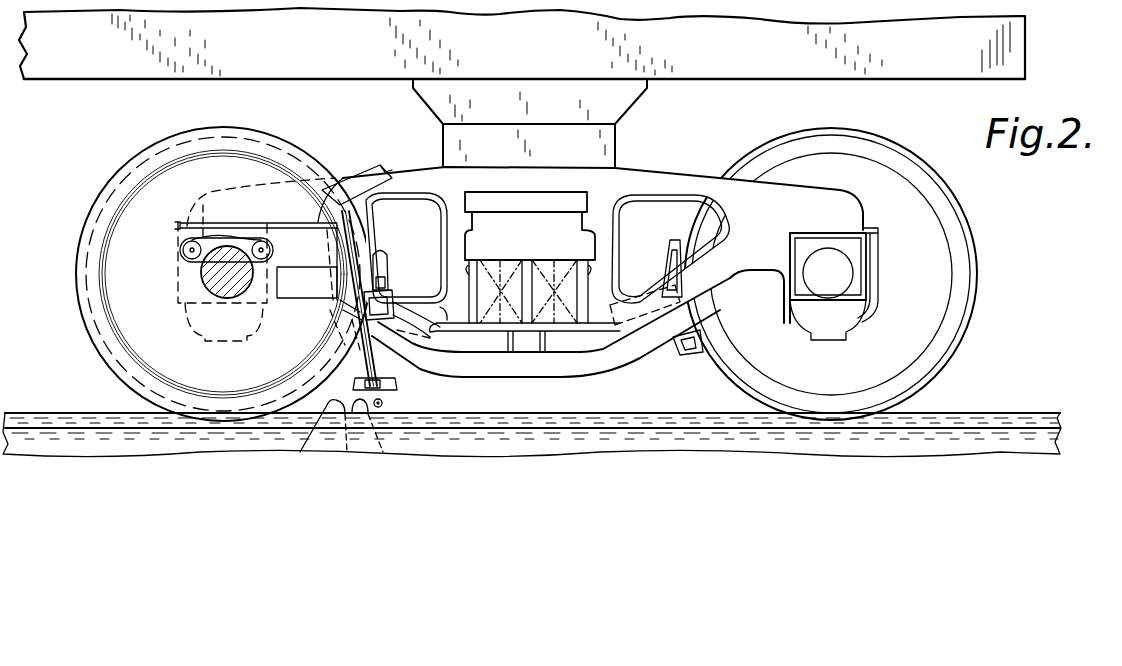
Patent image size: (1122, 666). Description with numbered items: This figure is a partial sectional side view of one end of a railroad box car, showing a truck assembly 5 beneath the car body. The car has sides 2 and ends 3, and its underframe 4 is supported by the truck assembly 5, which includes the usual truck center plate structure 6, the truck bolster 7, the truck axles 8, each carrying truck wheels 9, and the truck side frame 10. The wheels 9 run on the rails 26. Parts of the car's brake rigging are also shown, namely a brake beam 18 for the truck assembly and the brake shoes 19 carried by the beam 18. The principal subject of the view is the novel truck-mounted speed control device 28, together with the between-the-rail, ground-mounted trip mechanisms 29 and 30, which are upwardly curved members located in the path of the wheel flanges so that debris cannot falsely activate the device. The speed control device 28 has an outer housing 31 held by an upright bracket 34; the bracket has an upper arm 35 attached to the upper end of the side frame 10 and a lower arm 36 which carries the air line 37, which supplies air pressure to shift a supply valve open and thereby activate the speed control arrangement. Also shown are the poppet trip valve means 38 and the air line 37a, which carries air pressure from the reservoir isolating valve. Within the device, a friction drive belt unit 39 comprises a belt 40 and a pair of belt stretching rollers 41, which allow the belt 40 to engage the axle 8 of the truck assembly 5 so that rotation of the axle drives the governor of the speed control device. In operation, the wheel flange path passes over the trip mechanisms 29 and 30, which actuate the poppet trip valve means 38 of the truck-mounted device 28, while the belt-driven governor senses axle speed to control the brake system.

The side 2 is at (522, 43).
The end 3 is at (1025, 42).
The underframe 4 is at (320, 80).
The truck assembly 5 is at (598, 249).
The truck center plate structure 6 is at (441, 137).
The truck bolster 7 is at (531, 208).
The truck axle 8 is at (844, 278).
The truck wheel 9 is at (962, 210).
The truck side frame 10 is at (672, 180).
The brake beam 18 is at (415, 300).
The brake shoe 19 is at (380, 257).
The rail 26 is at (578, 410).
The truck mounted speed control device 28 is at (227, 214).
The trip mechanism 29 is at (334, 416).
The trip mechanism 30 is at (383, 440).
The outer housing 31 is at (283, 222).
The upright bracket 34 is at (343, 332).
The upper arm 35 is at (365, 178).
The lower arm 36 is at (343, 309).
The air line 37 is at (330, 304).
The air line 37a is at (384, 373).
The poppet trip valve means 38 is at (388, 402).
The friction drive belt unit 39 is at (178, 245).
The belt 40 is at (201, 215).
The belt stretching roller 41 is at (188, 251).